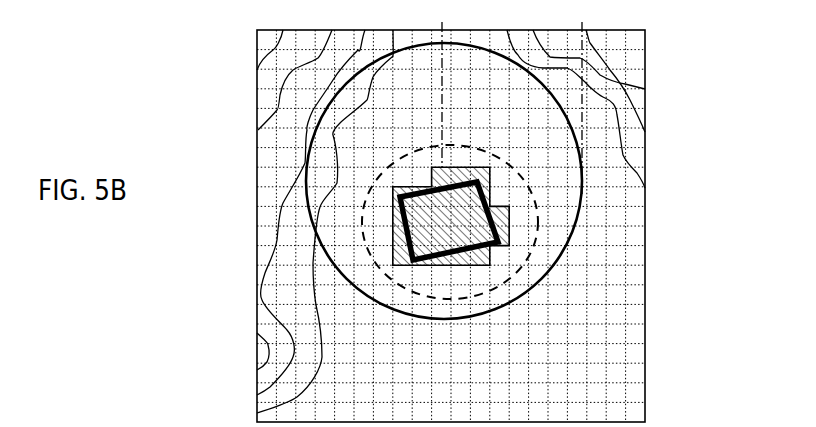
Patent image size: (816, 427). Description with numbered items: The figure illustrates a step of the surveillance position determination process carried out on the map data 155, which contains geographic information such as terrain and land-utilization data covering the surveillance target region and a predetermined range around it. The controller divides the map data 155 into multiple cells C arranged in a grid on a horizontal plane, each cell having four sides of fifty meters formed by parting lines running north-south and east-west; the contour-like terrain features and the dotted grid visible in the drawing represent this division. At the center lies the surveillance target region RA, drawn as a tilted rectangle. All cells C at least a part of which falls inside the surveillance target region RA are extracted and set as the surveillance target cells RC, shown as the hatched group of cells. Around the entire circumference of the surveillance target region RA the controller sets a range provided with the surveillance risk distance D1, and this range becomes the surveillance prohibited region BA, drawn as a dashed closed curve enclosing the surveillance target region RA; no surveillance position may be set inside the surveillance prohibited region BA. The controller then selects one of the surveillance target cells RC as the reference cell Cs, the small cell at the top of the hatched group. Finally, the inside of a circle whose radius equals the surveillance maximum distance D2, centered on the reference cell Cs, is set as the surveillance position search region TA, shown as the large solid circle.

The map data 155 is at (647, 53).
The cells C is at (283, 132).
The reference cell Cs is at (432, 180).
The surveillance target cells RC is at (403, 260).
The surveillance maximum distance D2 is at (582, 22).
The surveillance position search region TA is at (580, 195).
The surveillance risk distance D1 is at (488, 203).
The surveillance target region RA is at (490, 218).
The surveillance prohibited region BA is at (540, 262).